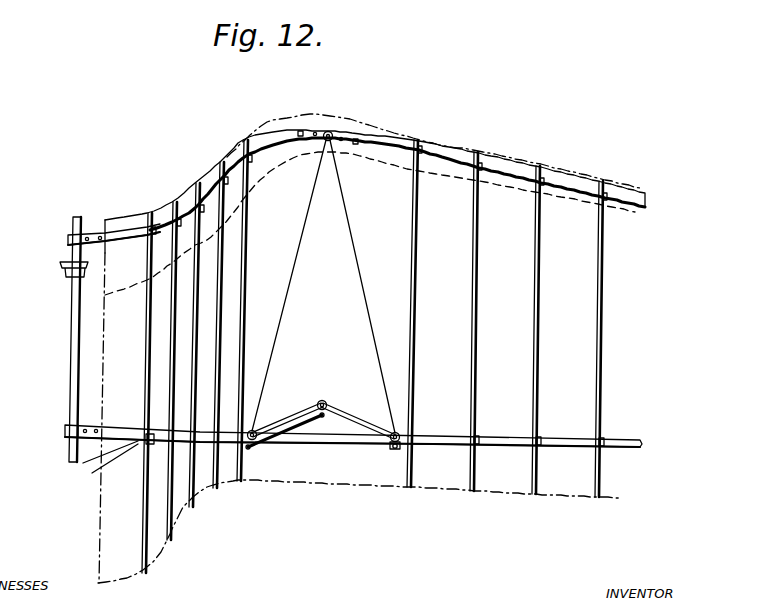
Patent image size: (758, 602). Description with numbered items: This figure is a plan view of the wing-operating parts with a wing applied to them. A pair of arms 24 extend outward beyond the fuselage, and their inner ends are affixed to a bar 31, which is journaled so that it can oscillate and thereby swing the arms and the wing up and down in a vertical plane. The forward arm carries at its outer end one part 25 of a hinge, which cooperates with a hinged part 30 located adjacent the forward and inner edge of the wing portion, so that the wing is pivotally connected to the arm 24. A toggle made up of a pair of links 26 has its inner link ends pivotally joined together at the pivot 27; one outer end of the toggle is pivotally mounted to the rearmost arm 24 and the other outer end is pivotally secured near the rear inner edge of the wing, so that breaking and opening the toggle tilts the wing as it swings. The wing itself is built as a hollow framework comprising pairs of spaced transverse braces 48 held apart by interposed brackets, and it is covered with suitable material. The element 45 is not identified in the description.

The arm 24 is at (115, 236).
The hinge part 25 is at (331, 134).
The toggle link 26 is at (341, 413).
The pivotal connection of toggle links 27 is at (324, 417).
The hinged part 30 is at (362, 141).
The bar 31 is at (72, 368).
The pivot bracket 45 is at (386, 449).
The transverse brace 48 is at (533, 253).